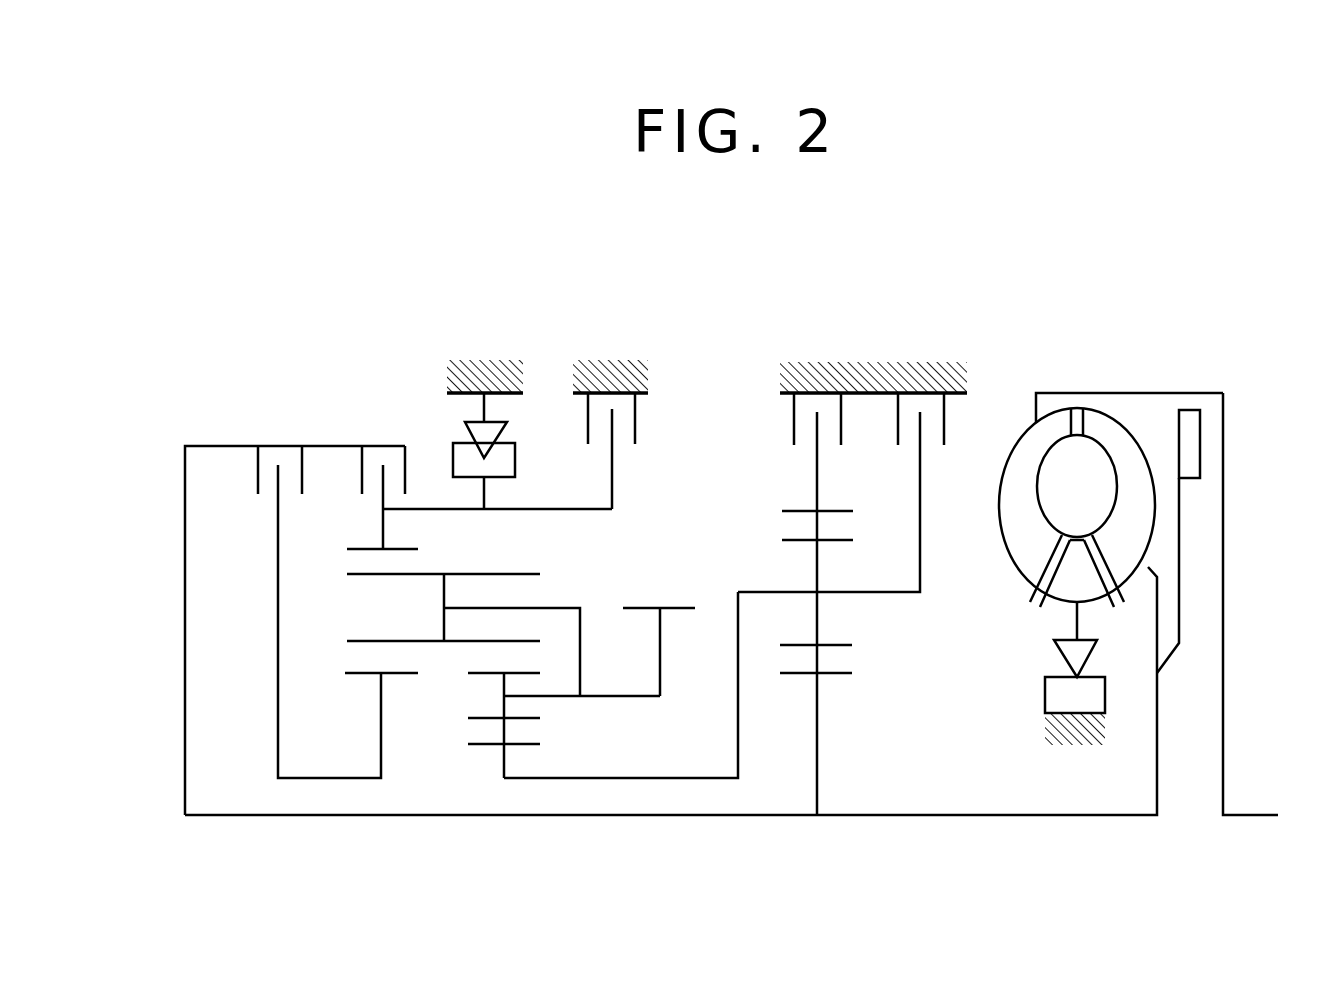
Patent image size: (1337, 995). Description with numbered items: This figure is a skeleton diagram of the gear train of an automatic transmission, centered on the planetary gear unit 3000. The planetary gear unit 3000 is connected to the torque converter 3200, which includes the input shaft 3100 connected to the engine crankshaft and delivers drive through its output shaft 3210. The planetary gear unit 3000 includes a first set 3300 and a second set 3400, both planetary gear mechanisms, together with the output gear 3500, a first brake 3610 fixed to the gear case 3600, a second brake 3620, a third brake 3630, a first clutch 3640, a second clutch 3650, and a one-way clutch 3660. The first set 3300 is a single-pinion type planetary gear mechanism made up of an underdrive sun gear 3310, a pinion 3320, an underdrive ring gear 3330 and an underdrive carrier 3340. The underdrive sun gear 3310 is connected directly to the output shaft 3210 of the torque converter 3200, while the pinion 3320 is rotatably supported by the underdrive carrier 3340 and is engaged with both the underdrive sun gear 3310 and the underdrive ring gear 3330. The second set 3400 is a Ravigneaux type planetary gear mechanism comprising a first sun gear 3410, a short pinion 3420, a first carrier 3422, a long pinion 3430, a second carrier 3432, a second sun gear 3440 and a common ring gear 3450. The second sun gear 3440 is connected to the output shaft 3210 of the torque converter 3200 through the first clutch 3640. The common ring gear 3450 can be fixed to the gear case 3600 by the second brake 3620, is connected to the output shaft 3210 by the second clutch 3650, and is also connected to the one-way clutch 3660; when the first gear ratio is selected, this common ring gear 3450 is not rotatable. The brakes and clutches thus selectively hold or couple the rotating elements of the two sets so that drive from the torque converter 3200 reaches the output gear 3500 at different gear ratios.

The planetary gear unit 3000 is at (725, 287).
The input shaft 3100 is at (1258, 818).
The torque converter 3200 is at (1105, 365).
The output shaft 3210 is at (950, 815).
The first set 3300 is at (815, 840).
The sun gear S (UD) 3310 is at (828, 722).
The pinion 3320 is at (842, 637).
The ring gear R (UD) 3330 is at (818, 508).
The carrier C (UD) 3340 is at (922, 558).
The second set 3400 is at (485, 840).
The sun gear S (D) 3410 is at (548, 743).
The short pinion 3420 is at (465, 676).
The carrier C (1) 3422 is at (565, 699).
The long pinion 3430 is at (540, 568).
The carrier C (2) 3432 is at (513, 606).
The sun gear S (S) 3440 is at (346, 676).
The ring gear R (1) (R (2)) 3450 is at (412, 536).
The output gear 3500 is at (697, 604).
The gear case 3600 is at (487, 358).
The B1 brake 3610 is at (940, 453).
The B2 brake 3620 is at (622, 453).
The B3 brake 3630 is at (785, 452).
The C1 clutch 3640 is at (252, 462).
The C2 clutch 3650 is at (353, 462).
The one-way clutch F 3660 is at (456, 438).